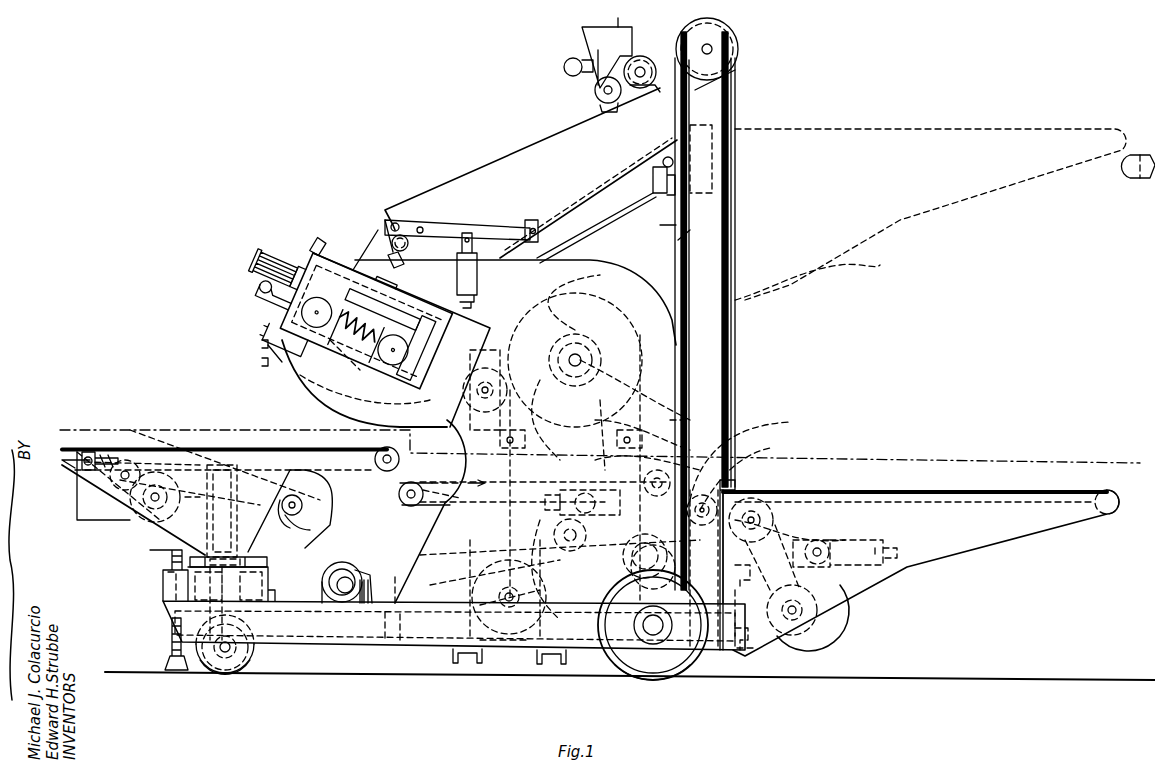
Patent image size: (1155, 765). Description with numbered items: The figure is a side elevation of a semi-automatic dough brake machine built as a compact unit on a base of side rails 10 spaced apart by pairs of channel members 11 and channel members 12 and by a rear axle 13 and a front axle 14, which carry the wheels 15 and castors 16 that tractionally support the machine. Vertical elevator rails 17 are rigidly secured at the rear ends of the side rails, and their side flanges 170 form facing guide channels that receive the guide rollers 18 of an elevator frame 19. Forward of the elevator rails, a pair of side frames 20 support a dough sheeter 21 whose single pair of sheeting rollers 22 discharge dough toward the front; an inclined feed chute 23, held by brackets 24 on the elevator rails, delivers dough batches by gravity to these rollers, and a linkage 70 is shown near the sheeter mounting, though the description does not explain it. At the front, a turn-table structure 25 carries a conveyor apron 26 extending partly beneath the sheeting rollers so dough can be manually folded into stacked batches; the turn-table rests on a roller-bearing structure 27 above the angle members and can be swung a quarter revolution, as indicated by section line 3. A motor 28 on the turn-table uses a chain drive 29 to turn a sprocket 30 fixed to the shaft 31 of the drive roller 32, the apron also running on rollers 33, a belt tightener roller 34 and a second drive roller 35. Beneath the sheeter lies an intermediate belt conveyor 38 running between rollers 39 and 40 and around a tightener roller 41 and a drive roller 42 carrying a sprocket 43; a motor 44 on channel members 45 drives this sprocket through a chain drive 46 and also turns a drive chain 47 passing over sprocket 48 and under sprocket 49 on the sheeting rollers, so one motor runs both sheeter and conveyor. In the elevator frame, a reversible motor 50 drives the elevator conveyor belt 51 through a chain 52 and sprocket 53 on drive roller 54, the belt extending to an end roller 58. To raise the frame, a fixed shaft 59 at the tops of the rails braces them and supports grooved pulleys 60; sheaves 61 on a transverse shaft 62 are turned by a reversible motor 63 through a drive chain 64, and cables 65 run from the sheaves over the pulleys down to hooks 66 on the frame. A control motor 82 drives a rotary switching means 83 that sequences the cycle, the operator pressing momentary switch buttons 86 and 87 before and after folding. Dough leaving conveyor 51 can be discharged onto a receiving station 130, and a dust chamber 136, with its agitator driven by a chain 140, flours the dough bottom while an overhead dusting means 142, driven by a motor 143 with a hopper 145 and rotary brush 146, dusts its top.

The section line 3- 3 is at (59, 444).
The side rails 10 is at (335, 625).
The channel members 11 is at (545, 664).
The channel members 12 is at (180, 588).
The rear axle 13 is at (650, 627).
The front axle 14 is at (225, 650).
The wheels 15 is at (640, 672).
The castors 16 is at (240, 672).
The vertical elevator rails 17 is at (720, 120).
The guide rollers 18 is at (760, 475).
The elevator frame 19 is at (968, 190).
The side frames 20 is at (545, 275).
The dough sheeter 21 is at (330, 246).
The sheeting rollers 22 is at (335, 375).
The inclined feed chute 23 is at (580, 155).
The brackets 24 is at (660, 195).
The turn-table structure 25 is at (300, 488).
The conveyor apron 26 is at (258, 470).
The roller-bearing structure 27 is at (268, 560).
The motor 28 is at (315, 528).
The chain drive 29 is at (302, 506).
The sprocket 30 is at (138, 522).
The shaft 31 is at (155, 500).
The drive roller 32 is at (190, 497).
The rollers 33 is at (399, 460).
The belt tightener roller 34 is at (80, 465).
The drive roller 35 is at (110, 478).
The intermediate belt conveyor 38 is at (400, 480).
The roller 39 is at (408, 503).
The roller 40 is at (655, 478).
The tightener roller 41 is at (620, 505).
The drive roller 42 is at (555, 528).
The sprocket 43 is at (540, 540).
The motor 44 is at (705, 352).
The channel members 45 is at (715, 400).
The chain drive 46 is at (725, 375).
The drive chain 47 is at (620, 298).
The sprocket 48 is at (440, 380).
The sprocket 49 is at (292, 368).
The reversible motor 50 is at (848, 605).
The elevator conveyor belt 51 is at (870, 490).
The chain 52 is at (890, 578).
The sprocket 53 is at (835, 495).
The drive roller 54 is at (775, 500).
The end roller 58 is at (749, 455).
The fixed shaft 59 is at (730, 35).
The grooved pulleys 60 is at (712, 49).
The sheaves 61 is at (625, 565).
The transverse shaft 62 is at (685, 550).
The reversible motor 63 is at (472, 582).
The drive chain 64 is at (565, 590).
The cables 65 is at (745, 410).
The hooks 66 is at (745, 462).
The arm 70 is at (380, 258).
The control motor 82 is at (352, 580).
The rotary switching means 83 is at (348, 565).
The momentary switch button 86 is at (262, 344).
The momentary switch button 87 is at (262, 362).
The receiving station 130 is at (1143, 153).
The dust chamber 136 is at (690, 195).
The chain 140 is at (625, 210).
The dusting means 142 is at (572, 43).
The motor 143 is at (570, 73).
The hopper 145 is at (618, 18).
The rotary brush 146 is at (645, 95).
The side flanges 170 is at (735, 80).